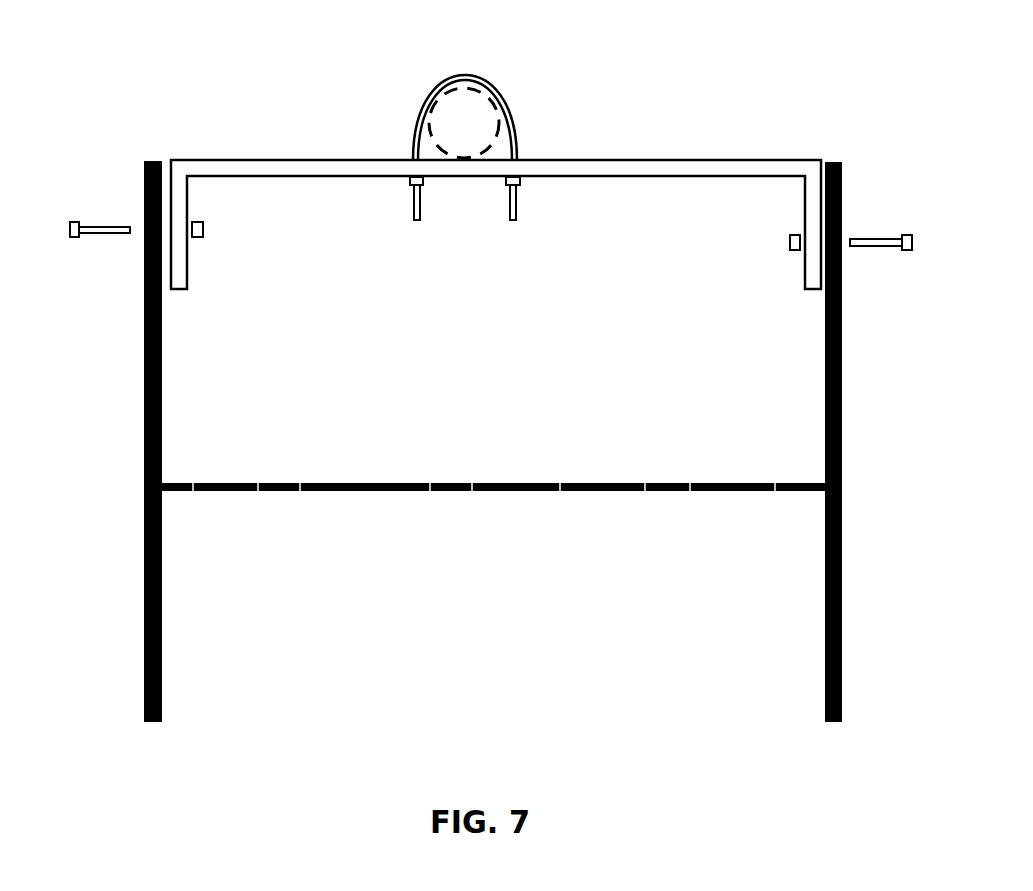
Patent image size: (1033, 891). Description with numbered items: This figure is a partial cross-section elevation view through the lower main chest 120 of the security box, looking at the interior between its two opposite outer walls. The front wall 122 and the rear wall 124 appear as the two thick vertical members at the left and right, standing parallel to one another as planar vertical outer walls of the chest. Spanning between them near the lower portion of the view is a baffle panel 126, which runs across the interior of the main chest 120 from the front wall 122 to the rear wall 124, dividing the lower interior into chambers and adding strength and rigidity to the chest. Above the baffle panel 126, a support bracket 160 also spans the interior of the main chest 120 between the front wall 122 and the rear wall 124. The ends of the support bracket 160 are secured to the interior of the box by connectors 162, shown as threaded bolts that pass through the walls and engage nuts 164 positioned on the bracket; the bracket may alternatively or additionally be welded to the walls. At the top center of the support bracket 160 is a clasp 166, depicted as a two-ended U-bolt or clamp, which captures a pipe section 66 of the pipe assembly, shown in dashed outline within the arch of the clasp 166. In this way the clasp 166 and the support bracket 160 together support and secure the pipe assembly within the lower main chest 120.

The pipe section 66 is at (442, 150).
The lower main chest 120 is at (868, 385).
The front wall 122 is at (144, 420).
The rear wall 124 is at (842, 180).
The baffle panel 126 is at (575, 484).
The support bracket 160 is at (328, 160).
The connectors 162 is at (112, 226).
The nuts 164 is at (203, 224).
The clasp 166 is at (447, 83).